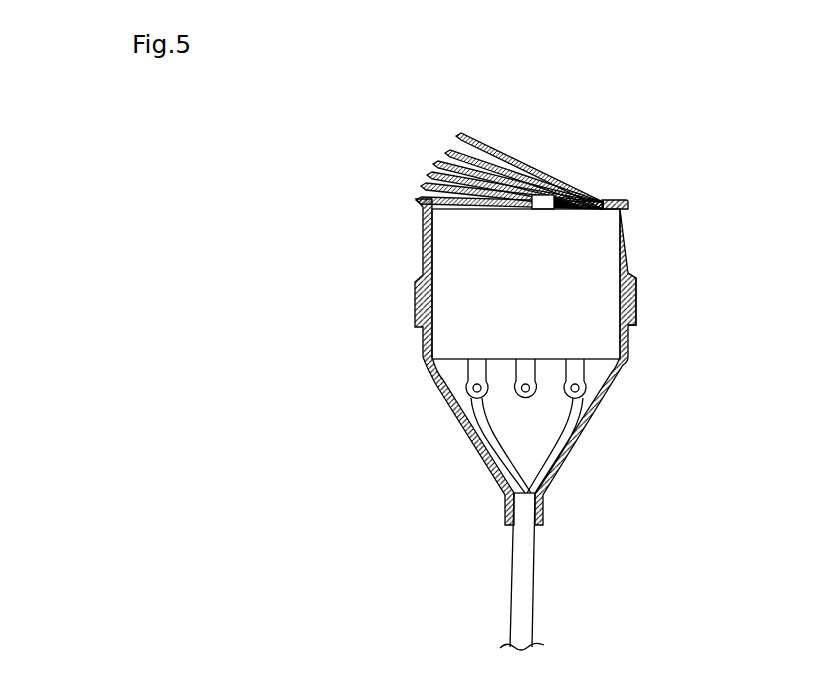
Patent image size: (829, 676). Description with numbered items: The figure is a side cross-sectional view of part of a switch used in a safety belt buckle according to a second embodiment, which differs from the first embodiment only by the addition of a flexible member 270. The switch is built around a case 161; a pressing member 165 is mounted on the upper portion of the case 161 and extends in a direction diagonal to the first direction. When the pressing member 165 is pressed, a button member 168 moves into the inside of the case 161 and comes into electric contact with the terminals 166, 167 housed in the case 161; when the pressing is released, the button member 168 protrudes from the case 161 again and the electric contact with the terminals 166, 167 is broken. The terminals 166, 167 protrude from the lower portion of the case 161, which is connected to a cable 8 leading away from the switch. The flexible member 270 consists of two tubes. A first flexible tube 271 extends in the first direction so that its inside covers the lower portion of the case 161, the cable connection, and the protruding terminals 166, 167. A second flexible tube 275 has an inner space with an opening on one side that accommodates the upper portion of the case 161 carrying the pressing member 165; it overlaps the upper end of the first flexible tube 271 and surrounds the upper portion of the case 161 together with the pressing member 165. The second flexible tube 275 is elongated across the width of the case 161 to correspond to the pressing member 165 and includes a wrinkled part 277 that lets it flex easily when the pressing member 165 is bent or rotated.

The cable 8 is at (525, 576).
The case 161 is at (600, 257).
The pressing member 165 is at (568, 197).
The terminal 166 is at (469, 384).
The terminal 167 is at (578, 376).
The button member 168 is at (542, 198).
The flexible member 270 is at (412, 263).
The first flexible tube 271 is at (627, 339).
The second flexible tube 275 is at (629, 202).
The wrinkled part 277 is at (446, 152).